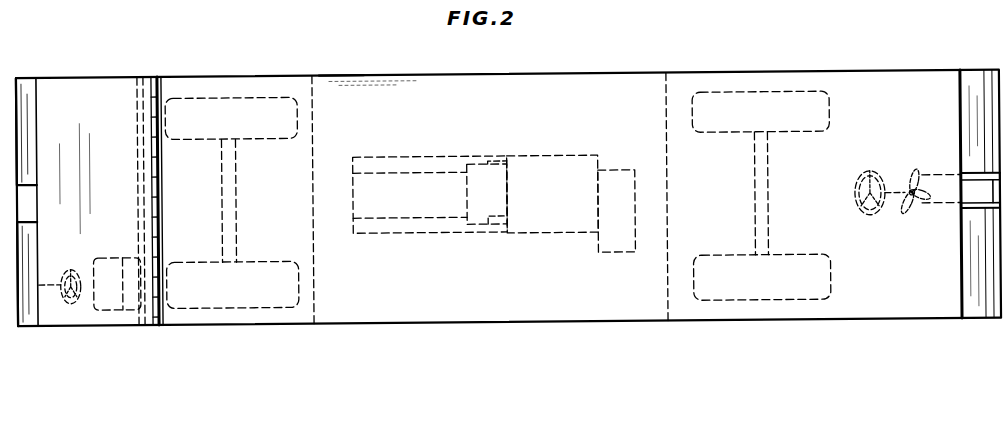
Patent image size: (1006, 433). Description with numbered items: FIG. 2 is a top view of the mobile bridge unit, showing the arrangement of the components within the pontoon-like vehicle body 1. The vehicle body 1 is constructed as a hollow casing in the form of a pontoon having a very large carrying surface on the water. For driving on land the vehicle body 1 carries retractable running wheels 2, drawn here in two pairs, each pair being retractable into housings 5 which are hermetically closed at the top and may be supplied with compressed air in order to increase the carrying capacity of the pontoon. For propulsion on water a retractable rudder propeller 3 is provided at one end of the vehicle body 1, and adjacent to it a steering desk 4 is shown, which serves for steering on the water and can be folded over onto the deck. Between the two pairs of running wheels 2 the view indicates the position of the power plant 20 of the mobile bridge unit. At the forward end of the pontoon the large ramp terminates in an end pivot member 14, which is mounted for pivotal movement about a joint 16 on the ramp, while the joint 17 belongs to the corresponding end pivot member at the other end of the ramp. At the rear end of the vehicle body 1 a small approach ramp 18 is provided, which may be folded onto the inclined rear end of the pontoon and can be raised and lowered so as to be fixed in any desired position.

The vehicle body 1 is at (557, 323).
The running wheels 2 is at (240, 93).
The rudder propeller 3 is at (912, 217).
The steering desk 4 is at (881, 178).
The housings 5 is at (167, 315).
The end pivot member 14 is at (97, 86).
The joint 16 is at (161, 191).
The joint 17 is at (342, 86).
The approach ramp 18 is at (973, 81).
The power plant 20 is at (430, 209).